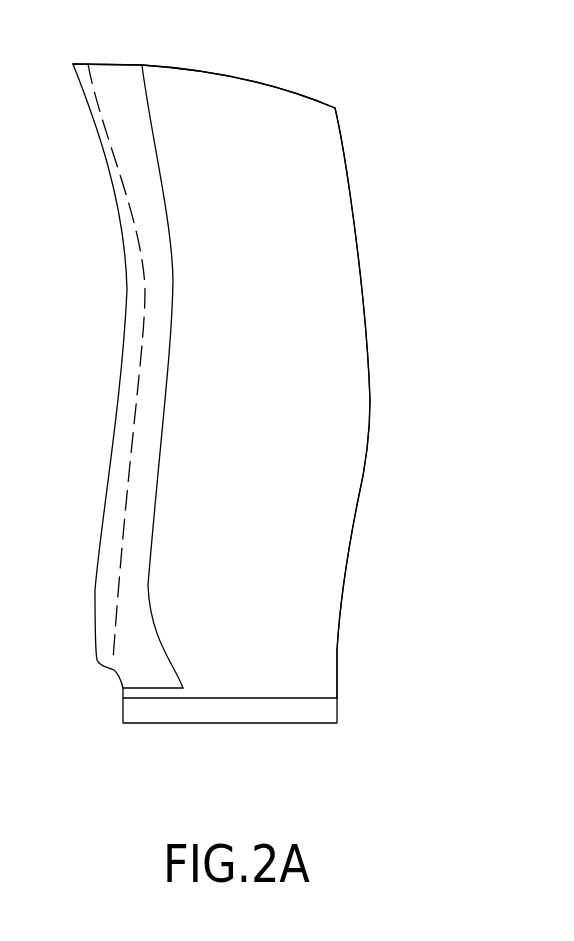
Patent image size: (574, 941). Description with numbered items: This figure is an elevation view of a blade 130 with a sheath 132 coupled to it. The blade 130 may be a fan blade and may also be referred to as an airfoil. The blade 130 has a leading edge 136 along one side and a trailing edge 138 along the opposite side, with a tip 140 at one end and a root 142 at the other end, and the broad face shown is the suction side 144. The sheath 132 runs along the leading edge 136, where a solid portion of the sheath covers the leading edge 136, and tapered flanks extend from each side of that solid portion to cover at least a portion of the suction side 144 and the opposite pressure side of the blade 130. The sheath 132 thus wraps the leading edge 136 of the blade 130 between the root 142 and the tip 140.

The blade 130 is at (375, 56).
The sheath 132 is at (128, 374).
The leading edge 136 is at (146, 288).
The trailing edge 138 is at (368, 408).
The tip 140 is at (196, 68).
The root 142 is at (339, 708).
The suction side 144 is at (336, 350).